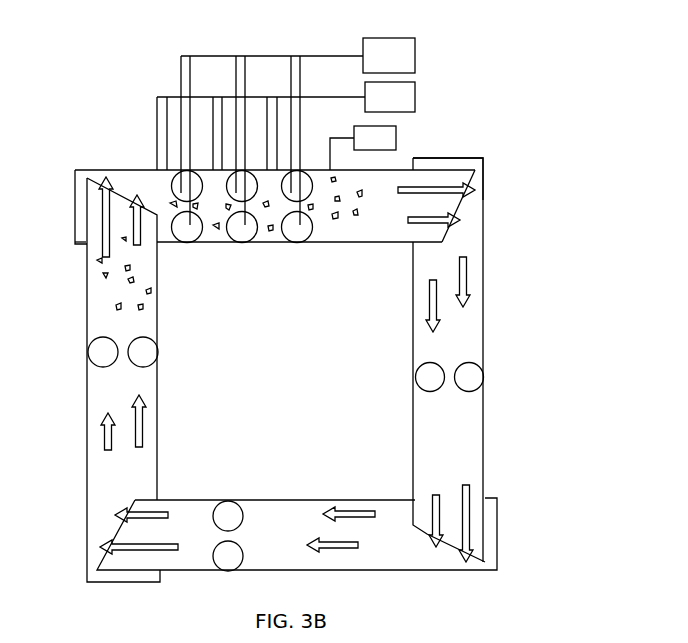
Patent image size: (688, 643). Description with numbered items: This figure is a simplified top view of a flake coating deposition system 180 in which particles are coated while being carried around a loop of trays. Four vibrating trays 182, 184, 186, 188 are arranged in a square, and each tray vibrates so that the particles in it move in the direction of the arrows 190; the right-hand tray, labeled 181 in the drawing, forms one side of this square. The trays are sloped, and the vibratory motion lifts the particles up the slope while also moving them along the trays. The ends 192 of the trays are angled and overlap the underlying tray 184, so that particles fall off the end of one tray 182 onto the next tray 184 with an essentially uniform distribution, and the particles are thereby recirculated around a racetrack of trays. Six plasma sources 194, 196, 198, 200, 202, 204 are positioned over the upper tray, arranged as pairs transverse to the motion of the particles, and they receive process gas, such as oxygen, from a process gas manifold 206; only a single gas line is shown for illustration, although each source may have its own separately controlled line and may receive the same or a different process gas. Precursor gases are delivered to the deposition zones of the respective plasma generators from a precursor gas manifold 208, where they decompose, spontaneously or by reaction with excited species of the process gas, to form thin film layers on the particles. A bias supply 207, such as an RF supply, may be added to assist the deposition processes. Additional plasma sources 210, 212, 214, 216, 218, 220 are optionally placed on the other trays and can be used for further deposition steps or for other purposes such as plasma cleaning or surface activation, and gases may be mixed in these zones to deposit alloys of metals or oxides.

The deposition system 180 is at (557, 100).
The right conduit section 181 is at (478, 345).
The vibrating tray 182 is at (95, 169).
The vibrating tray 184 is at (485, 173).
The vibrating tray 186 is at (383, 570).
The vibrating tray 188 is at (88, 412).
The arrows 190 is at (450, 183).
The ends of the trays 192 is at (458, 200).
The plasma source 194 is at (172, 186).
The plasma source 196 is at (185, 243).
The plasma source 198 is at (224, 210).
The plasma source 200 is at (242, 243).
The plasma source 202 is at (315, 185).
The plasma source 204 is at (297, 243).
The process gas manifold 206 is at (415, 60).
The bias supply 207 is at (396, 138).
The precursor gas manifold 208 is at (415, 97).
The additional plasma source 210 is at (417, 378).
The additional plasma source 212 is at (483, 380).
The additional plasma source 214 is at (230, 502).
The additional plasma source 216 is at (230, 570).
The additional plasma source 218 is at (158, 352).
The additional plasma source 220 is at (88, 353).